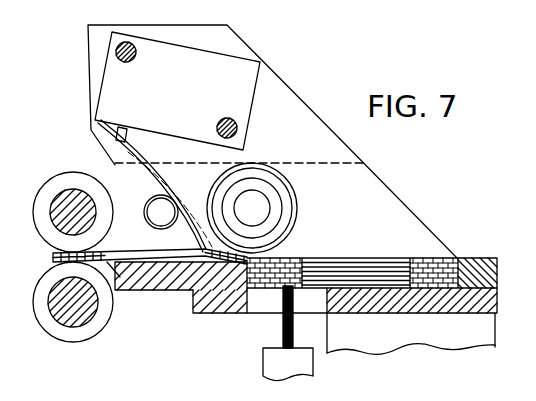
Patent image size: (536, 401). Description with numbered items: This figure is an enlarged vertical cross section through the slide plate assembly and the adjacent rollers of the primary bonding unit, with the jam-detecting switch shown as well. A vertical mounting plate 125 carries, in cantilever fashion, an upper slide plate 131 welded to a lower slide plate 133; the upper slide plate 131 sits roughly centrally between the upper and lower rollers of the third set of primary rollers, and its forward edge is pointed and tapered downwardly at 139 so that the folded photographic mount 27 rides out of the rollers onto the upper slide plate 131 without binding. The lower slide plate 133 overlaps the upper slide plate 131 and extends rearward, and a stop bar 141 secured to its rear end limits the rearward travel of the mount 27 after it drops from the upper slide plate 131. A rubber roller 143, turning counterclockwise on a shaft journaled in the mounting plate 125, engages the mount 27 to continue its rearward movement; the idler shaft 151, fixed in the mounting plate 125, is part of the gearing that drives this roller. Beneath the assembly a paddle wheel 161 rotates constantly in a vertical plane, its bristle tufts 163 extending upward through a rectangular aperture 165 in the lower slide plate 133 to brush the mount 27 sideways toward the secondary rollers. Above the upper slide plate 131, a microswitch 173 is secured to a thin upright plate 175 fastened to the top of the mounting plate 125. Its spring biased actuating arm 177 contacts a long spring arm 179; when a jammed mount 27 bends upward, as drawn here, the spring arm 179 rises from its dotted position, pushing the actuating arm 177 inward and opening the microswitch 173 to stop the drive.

The folded photographic mount 27 is at (127, 253).
The mounting plate 125 is at (394, 202).
The upper slide plate 131 is at (168, 288).
The lower slide plate 133 is at (215, 312).
The tapered leading edge 139 is at (112, 263).
The stop bar 141 is at (475, 258).
The rubber roller 143 is at (287, 213).
The idler shaft 151 is at (148, 203).
The paddle wheel 161 is at (263, 362).
The bristle tufts 163 is at (283, 329).
The rectangular aperture 165 is at (247, 301).
The microswitch 173 is at (177, 91).
The upright plate 175 is at (292, 100).
The actuating arm 177 is at (129, 140).
The spring arm 179 is at (162, 183).